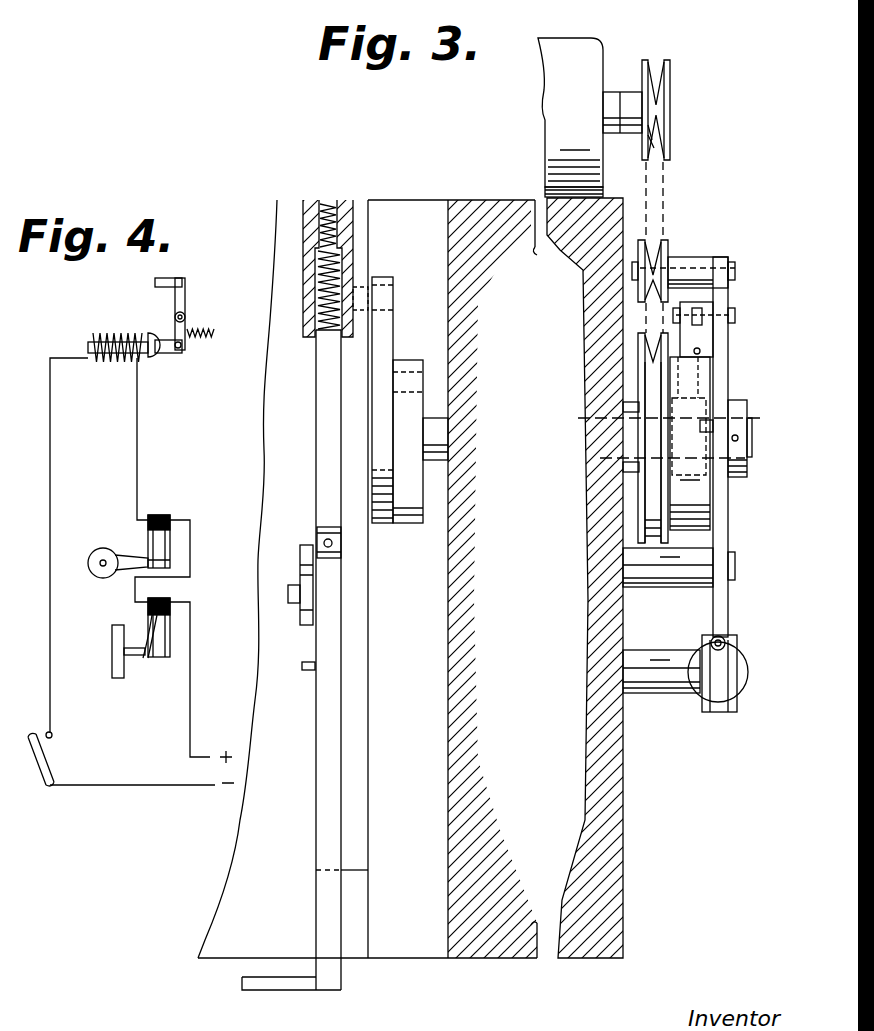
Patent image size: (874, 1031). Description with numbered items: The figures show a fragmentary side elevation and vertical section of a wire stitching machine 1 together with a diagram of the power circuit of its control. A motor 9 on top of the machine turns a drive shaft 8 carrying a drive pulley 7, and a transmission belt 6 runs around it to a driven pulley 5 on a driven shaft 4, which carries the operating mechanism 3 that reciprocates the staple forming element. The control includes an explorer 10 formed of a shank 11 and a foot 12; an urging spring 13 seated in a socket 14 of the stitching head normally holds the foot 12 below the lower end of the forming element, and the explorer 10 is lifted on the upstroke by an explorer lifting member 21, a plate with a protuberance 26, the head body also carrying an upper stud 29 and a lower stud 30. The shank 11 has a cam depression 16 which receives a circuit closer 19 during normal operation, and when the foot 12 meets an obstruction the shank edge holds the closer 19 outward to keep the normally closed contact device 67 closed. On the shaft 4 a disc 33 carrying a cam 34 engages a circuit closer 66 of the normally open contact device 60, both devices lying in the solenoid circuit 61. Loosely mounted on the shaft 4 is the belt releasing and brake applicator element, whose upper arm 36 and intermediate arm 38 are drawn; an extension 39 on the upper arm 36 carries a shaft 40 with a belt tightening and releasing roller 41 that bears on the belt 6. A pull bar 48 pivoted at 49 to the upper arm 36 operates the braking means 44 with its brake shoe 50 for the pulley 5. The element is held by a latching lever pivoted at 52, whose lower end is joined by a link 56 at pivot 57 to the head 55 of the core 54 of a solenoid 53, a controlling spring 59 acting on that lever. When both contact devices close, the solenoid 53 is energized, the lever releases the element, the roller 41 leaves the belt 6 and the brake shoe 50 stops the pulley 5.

In FIG. 3, the wire stitching machine 1 is at (484, 952).
In FIG. 3, the operating mechanism 3 is at (412, 470).
In FIG. 3, the driven shaft 4 is at (434, 425).
In FIG. 3, the driven pulley 5 is at (645, 355).
In FIG. 3, the transmission belt 6 is at (665, 190).
In FIG. 3, the drive pulley 7 is at (670, 95).
In FIG. 3, the drive shaft 8 is at (630, 100).
In FIG. 3, the motor 9 is at (583, 48).
In FIG. 3, the explorer 10 is at (307, 462).
In FIG. 3, the shank 11 is at (325, 490).
In FIG. 4, the shank 11 is at (120, 670).
In FIG. 3, the foot 12 is at (286, 992).
In FIG. 3, the urging spring 13 is at (330, 210).
In FIG. 3, the socket 14 is at (345, 252).
In FIG. 3, the depression 16 is at (318, 530).
In FIG. 4, the depression 16 is at (118, 652).
In FIG. 3, the circuit closer 19 is at (324, 543).
In FIG. 4, the circuit closer 19 is at (137, 648).
In FIG. 3, the explorer lifting member 21 is at (294, 628).
In FIG. 3, the protuberance 26 is at (300, 555).
In FIG. 3, the upper stud 29 is at (288, 592).
In FIG. 3, the lower stud 30 is at (306, 674).
In FIG. 3, the disc 33 is at (706, 380).
In FIG. 4, the cam 34 is at (120, 578).
In FIG. 3, the upper arm 36 is at (722, 345).
In FIG. 3, the intermediate arm 38 is at (730, 427).
In FIG. 4, the intermediate arm 38 is at (172, 278).
In FIG. 3, the extension 39 is at (700, 262).
In FIG. 3, the shaft 40 is at (735, 272).
In FIG. 3, the belt tightening and releasing roller 41 is at (672, 248).
In FIG. 3, the braking means 44 is at (700, 353).
In FIG. 3, the pull bar 48 is at (700, 328).
In FIG. 3, the pivot 49 is at (735, 316).
In FIG. 3, the brake shoe 50 is at (705, 402).
In FIG. 3, the pivot 52 is at (735, 570).
In FIG. 3, the solenoid 53 is at (748, 686).
In FIG. 4, the solenoid 53 is at (118, 360).
In FIG. 4, the core 54 is at (144, 362).
In FIG. 3, the head 55 is at (738, 640).
In FIG. 4, the head 55 is at (154, 333).
In FIG. 4, the link 56 is at (172, 355).
In FIG. 3, the pivot 57 is at (695, 690).
In FIG. 3, the controlling spring 59 is at (710, 641).
In FIG. 4, the contact device 60 is at (138, 543).
In FIG. 4, the solenoid circuit 61 is at (50, 505).
In FIG. 4, the circuit closer 66 is at (130, 577).
In FIG. 4, the contact device 67 is at (178, 629).